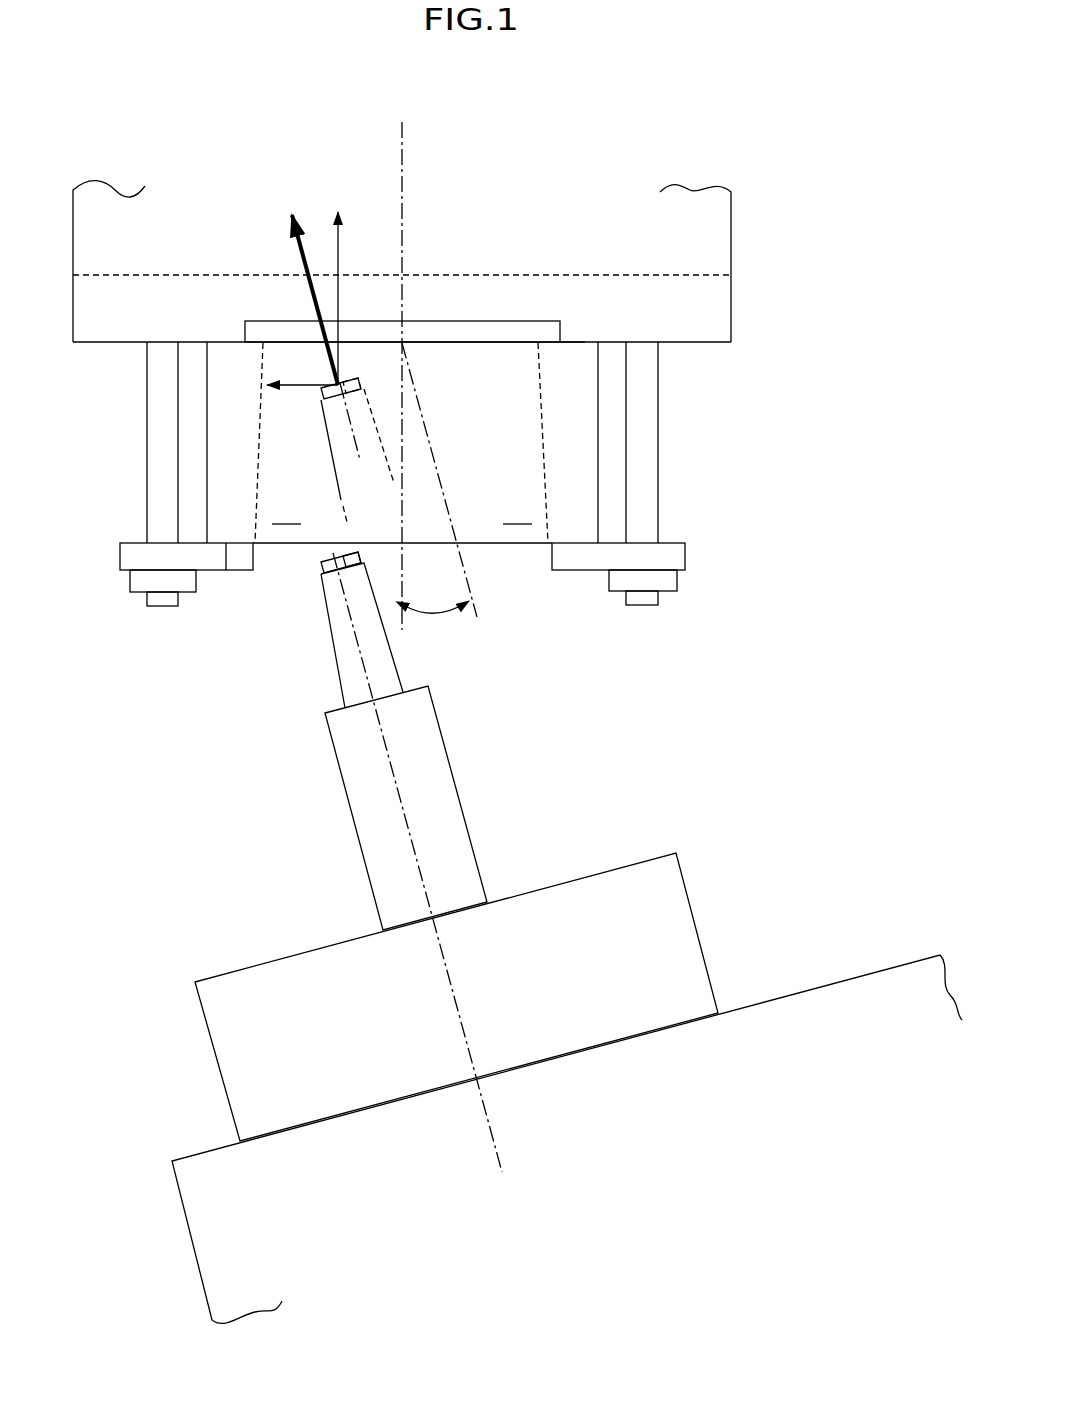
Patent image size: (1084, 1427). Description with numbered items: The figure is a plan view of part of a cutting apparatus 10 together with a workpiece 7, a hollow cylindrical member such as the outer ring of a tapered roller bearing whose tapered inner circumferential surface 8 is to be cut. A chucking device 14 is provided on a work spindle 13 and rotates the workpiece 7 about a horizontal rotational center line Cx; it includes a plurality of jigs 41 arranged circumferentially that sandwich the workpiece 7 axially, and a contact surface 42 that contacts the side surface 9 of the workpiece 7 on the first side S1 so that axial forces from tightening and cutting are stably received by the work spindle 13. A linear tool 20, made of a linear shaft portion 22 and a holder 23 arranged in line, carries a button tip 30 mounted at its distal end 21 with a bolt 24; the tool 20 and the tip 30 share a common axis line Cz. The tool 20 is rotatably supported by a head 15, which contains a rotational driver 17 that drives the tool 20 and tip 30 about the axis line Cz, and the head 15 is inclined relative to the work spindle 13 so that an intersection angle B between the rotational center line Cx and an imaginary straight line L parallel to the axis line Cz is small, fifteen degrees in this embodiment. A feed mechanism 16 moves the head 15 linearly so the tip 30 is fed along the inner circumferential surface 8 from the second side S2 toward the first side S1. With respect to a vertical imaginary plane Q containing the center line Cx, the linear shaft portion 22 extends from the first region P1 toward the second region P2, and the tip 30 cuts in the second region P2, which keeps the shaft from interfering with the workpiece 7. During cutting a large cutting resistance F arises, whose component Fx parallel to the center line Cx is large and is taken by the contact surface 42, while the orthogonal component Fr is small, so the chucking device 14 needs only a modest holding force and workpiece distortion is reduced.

The work spindle 13 is at (731, 243).
The side surface 9 is at (580, 342).
The workpiece 7 is at (598, 390).
The contact surface 42 is at (570, 342).
The inner circumferential surface 8 is at (540, 420).
The jigs 41 is at (132, 556).
The chucking device 14 is at (682, 583).
The distal end 21 is at (335, 548).
The button tip 30 is at (350, 385).
The bolt 24 is at (320, 598).
The holder 23 is at (327, 439).
The linear shaft portion 22 is at (378, 825).
The linear tool 20 is at (330, 758).
The feed mechanism 16 is at (838, 1032).
The rotational driver 17 is at (553, 1108).
The head 15 is at (182, 1212).
The cutting apparatus 10 is at (135, 1012).
The rotational center line Cx is at (402, 167).
The axis line Cz is at (393, 762).
The imaginary straight line L is at (430, 432).
The intersection angle B is at (438, 624).
The cutting resistance F is at (307, 280).
The axial component of cutting resistance Fx is at (338, 247).
The orthogonal component of cutting resistance Fr is at (307, 384).
The vertical imaginary plane Q is at (402, 237).
The first side S1 is at (228, 342).
The second side S2 is at (226, 572).
The first region P1 is at (518, 508).
The second region P2 is at (278, 443).